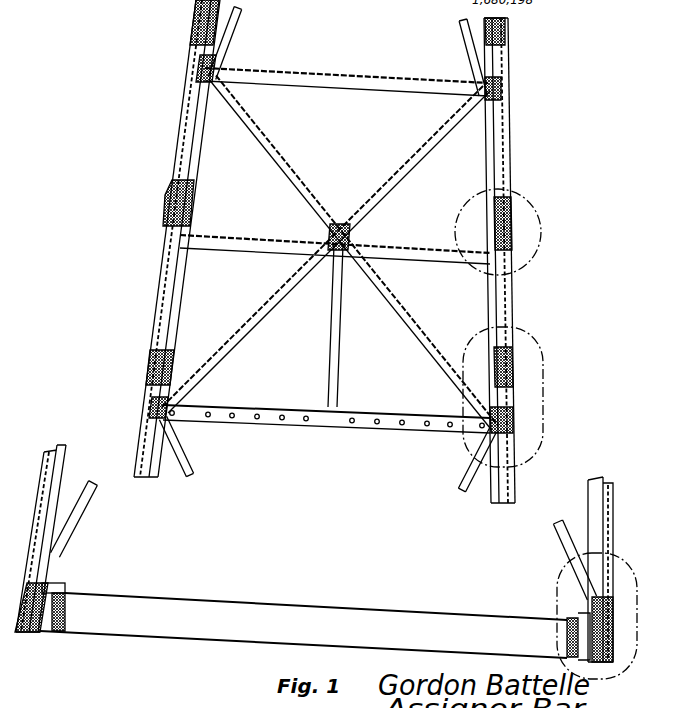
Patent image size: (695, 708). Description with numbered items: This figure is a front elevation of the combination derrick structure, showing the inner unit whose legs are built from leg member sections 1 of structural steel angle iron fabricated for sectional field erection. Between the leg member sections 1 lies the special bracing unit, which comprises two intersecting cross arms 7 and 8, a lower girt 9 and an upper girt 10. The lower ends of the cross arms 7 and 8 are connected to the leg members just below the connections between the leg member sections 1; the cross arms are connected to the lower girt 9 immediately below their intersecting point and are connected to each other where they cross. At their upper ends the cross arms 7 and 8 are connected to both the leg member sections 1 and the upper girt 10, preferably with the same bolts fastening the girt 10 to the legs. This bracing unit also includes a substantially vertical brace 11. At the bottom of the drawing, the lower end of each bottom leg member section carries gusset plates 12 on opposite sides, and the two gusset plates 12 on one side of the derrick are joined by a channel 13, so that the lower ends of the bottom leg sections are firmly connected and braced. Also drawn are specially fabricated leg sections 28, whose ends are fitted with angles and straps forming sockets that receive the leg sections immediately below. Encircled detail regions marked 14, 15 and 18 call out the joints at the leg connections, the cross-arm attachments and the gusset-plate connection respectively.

The leg member section 1 is at (500, 29).
The cross arm 7 is at (262, 313).
The cross arm 8 is at (400, 312).
The lower girt 9 is at (393, 245).
The upper girt 10 is at (392, 97).
The vertical brace 11 is at (337, 372).
The gusset plate 12 is at (62, 584).
The channel 13 is at (230, 600).
The detail circle 14 is at (498, 232).
The detail outline 15 is at (503, 397).
The detail outline 18 is at (597, 616).
The leg section 28 is at (205, 75).